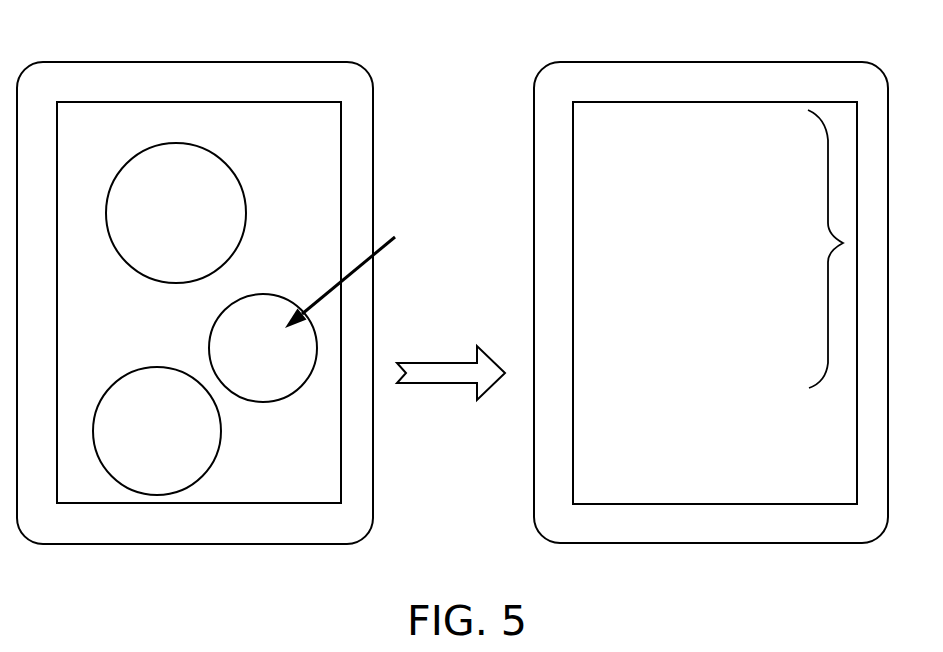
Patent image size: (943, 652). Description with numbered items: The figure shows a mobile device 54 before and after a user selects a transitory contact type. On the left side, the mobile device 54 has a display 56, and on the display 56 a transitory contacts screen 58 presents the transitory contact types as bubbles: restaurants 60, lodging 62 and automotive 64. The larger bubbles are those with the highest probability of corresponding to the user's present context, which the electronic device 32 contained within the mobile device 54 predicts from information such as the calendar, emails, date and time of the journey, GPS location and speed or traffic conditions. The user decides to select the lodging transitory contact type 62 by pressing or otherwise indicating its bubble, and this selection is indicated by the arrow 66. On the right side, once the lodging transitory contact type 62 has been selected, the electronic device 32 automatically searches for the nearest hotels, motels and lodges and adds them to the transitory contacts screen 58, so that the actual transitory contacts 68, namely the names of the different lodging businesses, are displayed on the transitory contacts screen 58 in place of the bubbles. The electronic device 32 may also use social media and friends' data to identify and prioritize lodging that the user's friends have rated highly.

The mobile device 54 is at (195, 274).
The electronic device 32 is at (33, 63).
The display 56 is at (180, 92).
The transitory contacts screen 58 is at (199, 253).
The restaurants 60 is at (122, 168).
The lodging 62 is at (209, 347).
The automotive 64 is at (113, 384).
The arrow 66 is at (352, 273).
The transitory contacts 68 is at (843, 245).